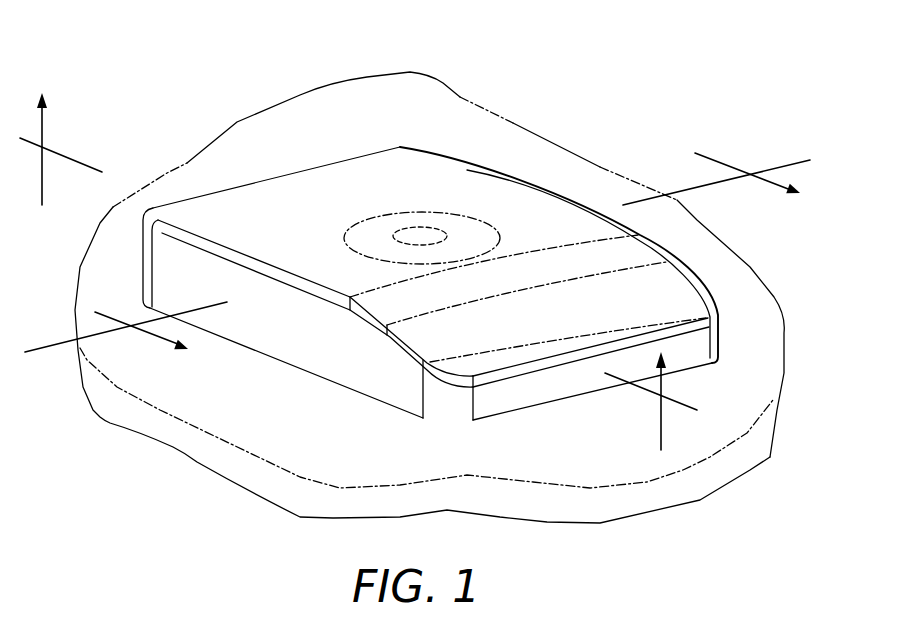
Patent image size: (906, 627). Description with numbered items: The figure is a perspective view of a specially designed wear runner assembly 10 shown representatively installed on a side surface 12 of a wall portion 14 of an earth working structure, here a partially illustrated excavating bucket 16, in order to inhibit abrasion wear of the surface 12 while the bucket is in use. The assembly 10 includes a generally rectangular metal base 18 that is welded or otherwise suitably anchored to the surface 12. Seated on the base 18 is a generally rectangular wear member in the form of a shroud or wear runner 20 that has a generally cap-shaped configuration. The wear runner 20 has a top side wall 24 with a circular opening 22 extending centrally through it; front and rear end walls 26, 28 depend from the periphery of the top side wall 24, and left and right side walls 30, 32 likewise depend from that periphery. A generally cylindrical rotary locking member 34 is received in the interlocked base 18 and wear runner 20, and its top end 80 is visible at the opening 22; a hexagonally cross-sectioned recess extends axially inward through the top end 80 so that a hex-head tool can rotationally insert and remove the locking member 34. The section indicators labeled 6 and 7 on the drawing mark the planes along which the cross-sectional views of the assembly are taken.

The wear runner assembly 10 is at (487, 143).
The side surface 12 is at (345, 460).
The wall portion 14 is at (193, 442).
The excavating bucket 16 is at (215, 55).
The base 18 is at (418, 247).
The wear runner 20 is at (533, 185).
The circular opening 22 is at (500, 239).
The top side wall 24 is at (307, 235).
The front end wall 26 is at (527, 393).
The rear end wall 28 is at (237, 188).
The left side wall 30 is at (305, 350).
The right side wall 32 is at (497, 176).
The rotary locking member 34 is at (372, 232).
The top end 80 is at (468, 238).
The section line 6- 6 is at (417, 242).
The section line 7- 7 is at (352, 275).